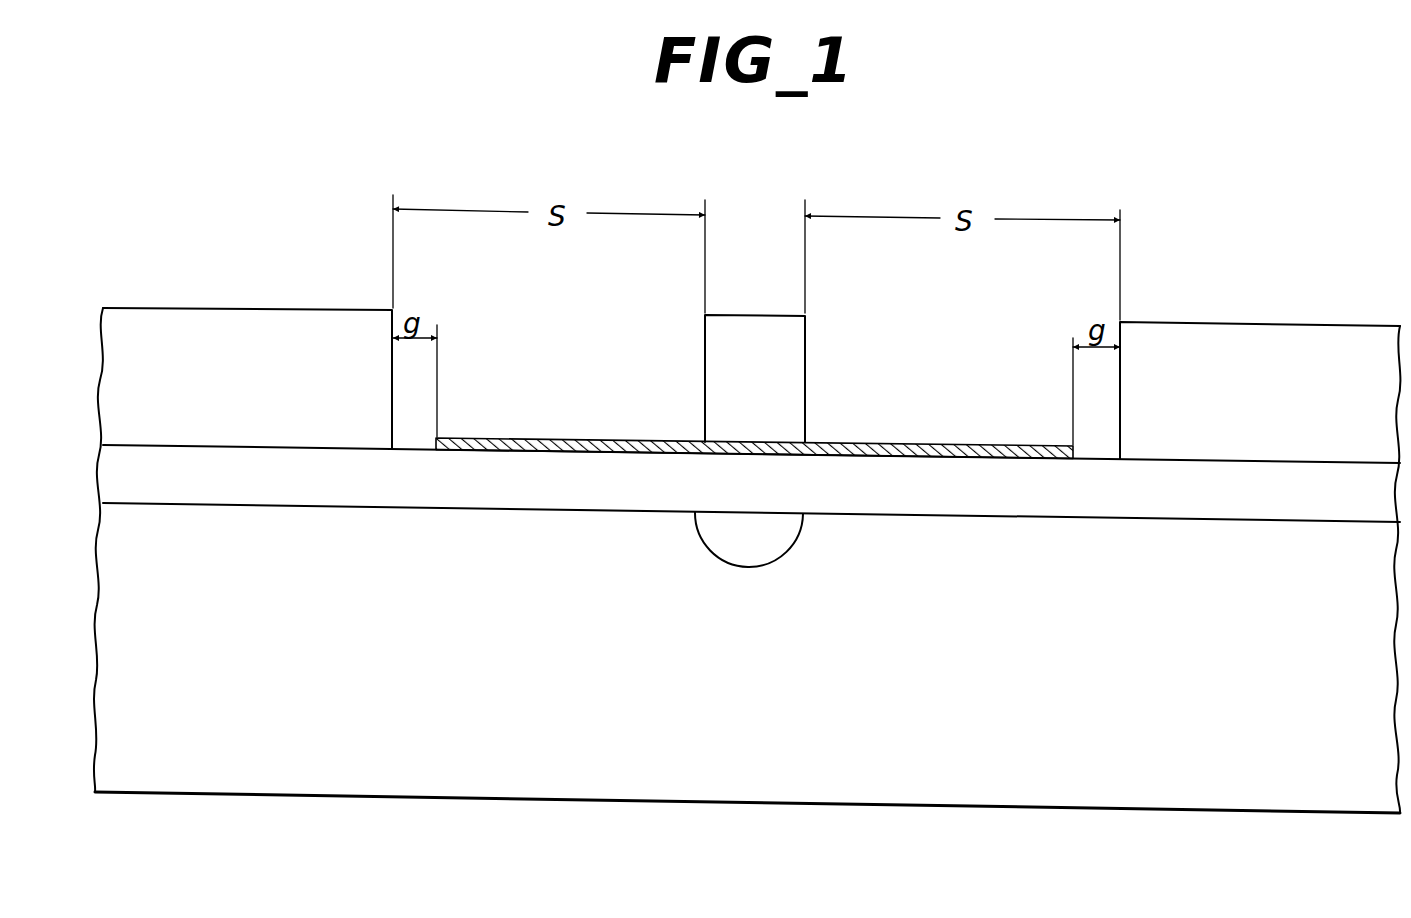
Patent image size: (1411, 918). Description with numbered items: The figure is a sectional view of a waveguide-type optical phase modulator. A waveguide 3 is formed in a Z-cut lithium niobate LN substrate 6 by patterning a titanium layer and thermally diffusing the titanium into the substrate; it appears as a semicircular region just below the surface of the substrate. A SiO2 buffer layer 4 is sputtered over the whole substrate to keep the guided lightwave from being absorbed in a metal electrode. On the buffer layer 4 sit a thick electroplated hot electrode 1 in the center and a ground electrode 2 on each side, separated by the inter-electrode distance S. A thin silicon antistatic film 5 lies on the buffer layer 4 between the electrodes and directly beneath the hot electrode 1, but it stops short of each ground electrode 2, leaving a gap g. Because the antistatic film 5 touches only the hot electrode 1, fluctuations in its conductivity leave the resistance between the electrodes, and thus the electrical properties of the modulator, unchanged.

The hot electrode 1 is at (785, 348).
The ground electrode 2 is at (235, 320).
The waveguide 3 is at (778, 538).
The buffer layer 4 is at (1352, 510).
The antistatic film 5 is at (922, 440).
The LN substrate 6 is at (1352, 576).